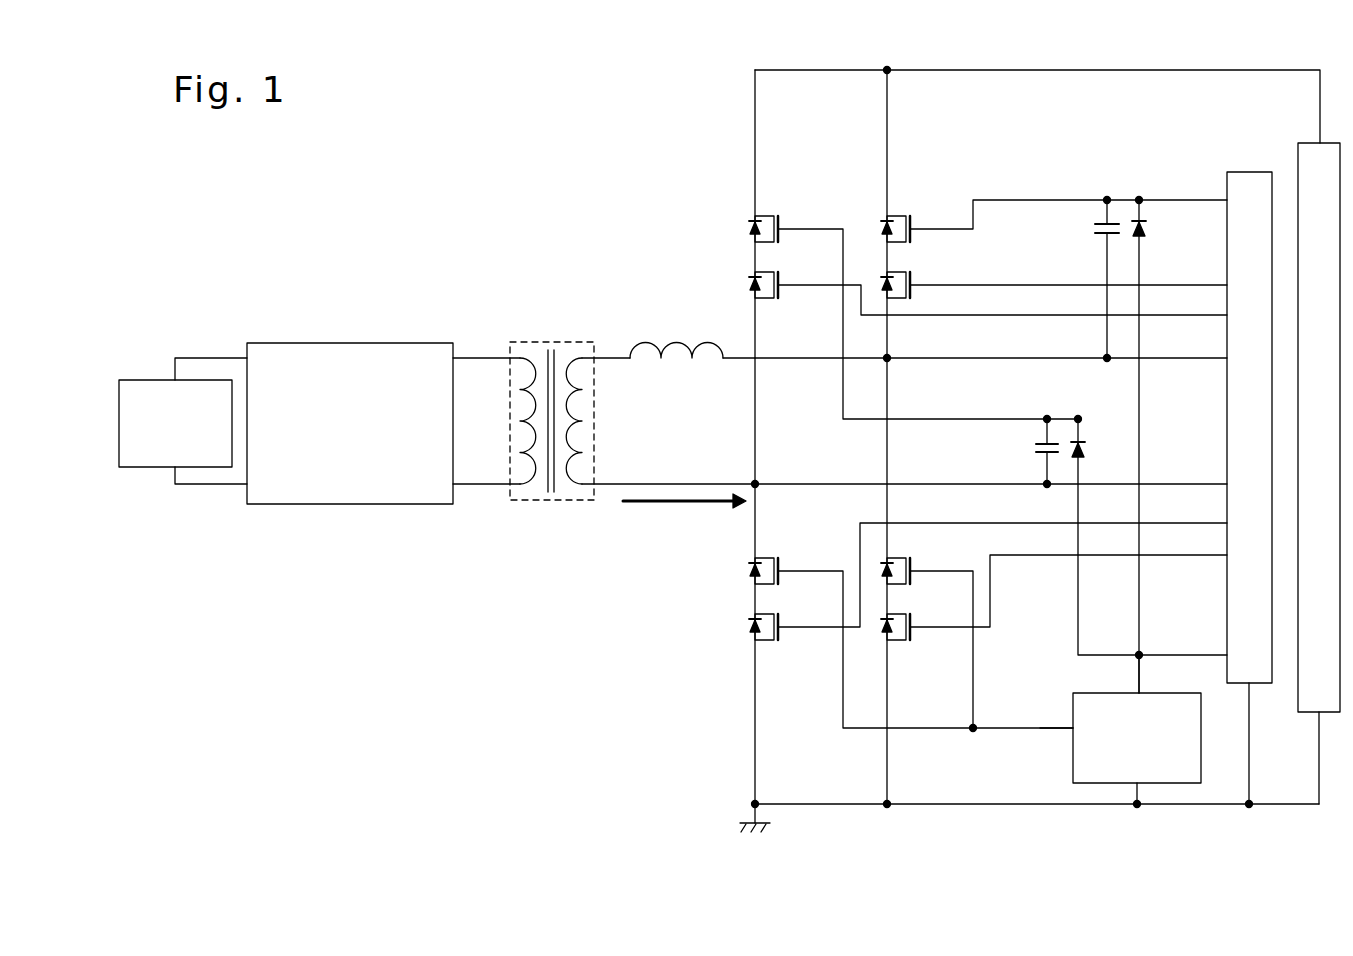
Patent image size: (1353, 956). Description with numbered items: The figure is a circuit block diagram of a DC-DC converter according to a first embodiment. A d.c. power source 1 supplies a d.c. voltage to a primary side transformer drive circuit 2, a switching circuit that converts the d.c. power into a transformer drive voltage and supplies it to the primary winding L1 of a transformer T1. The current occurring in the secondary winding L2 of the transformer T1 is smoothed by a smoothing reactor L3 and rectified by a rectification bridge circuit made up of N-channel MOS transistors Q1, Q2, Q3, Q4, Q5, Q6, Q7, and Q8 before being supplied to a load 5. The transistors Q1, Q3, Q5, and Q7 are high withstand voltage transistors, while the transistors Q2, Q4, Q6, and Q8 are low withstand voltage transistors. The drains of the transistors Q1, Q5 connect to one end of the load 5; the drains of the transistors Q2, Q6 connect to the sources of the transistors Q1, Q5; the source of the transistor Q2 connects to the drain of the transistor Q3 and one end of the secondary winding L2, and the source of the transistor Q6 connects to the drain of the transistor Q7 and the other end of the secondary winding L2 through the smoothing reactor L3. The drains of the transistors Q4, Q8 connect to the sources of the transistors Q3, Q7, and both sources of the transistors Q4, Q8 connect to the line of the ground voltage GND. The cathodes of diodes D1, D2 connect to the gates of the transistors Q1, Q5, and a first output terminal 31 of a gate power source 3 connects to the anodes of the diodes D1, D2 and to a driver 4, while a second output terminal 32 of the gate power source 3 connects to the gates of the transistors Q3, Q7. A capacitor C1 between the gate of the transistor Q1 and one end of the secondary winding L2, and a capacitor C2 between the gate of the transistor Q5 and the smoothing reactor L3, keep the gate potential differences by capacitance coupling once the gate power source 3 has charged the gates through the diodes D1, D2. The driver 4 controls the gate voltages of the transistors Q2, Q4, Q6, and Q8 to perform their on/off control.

The d.c. power source 1 is at (153, 380).
The primary side transformer drive circuit 2 is at (352, 343).
The transformer T1 is at (555, 399).
The primary winding L1 is at (522, 437).
The secondary winding L2 is at (588, 437).
The smoothing reactor L3 is at (678, 342).
The N-channel MOS transistor Q1 is at (788, 224).
The N-channel MOS transistor Q2 is at (788, 280).
The N-channel MOS transistor Q3 is at (788, 566).
The N-channel MOS transistor Q4 is at (788, 623).
The N-channel MOS transistor Q5 is at (920, 224).
The N-channel MOS transistor Q6 is at (920, 280).
The N-channel MOS transistor Q7 is at (920, 566).
The N-channel MOS transistor Q8 is at (920, 623).
The capacitor C1 is at (1032, 448).
The capacitor C2 is at (1092, 228).
The diode D1 is at (1088, 448).
The diode D2 is at (1148, 228).
The gate power source 3 is at (1201, 726).
The first output terminal 31 is at (1156, 674).
The second output terminal 32 is at (1057, 743).
The driver 4 is at (1252, 172).
The load 5 is at (1336, 143).
The ground voltage GND is at (752, 835).